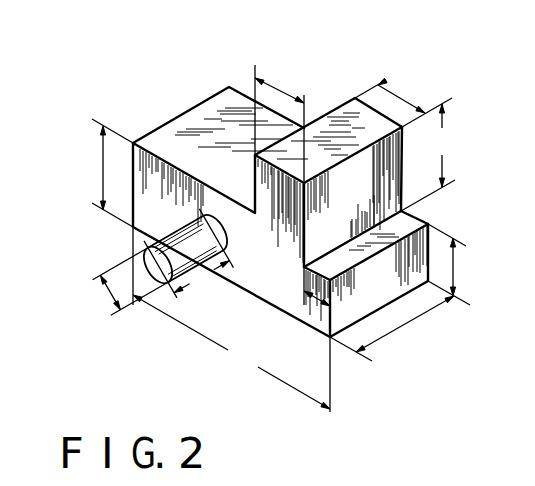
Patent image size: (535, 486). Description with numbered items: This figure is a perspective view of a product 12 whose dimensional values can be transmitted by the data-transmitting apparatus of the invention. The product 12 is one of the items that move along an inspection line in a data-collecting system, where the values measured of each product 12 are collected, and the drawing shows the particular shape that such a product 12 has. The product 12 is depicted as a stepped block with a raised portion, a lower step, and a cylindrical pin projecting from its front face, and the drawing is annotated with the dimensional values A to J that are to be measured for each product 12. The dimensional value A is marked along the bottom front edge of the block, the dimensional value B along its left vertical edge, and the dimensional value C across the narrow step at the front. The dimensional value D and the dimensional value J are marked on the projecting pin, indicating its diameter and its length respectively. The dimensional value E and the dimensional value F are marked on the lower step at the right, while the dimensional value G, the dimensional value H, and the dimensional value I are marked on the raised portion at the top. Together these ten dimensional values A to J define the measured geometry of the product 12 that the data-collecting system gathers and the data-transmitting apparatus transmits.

The product 12 is at (322, 95).
The dimensional value A is at (231, 319).
The dimensional value B is at (106, 173).
The dimensional value C is at (317, 296).
The dimensional value D is at (127, 282).
The dimensional value E is at (400, 321).
The dimensional value F is at (450, 260).
The dimensional value G is at (430, 154).
The dimensional value H is at (390, 94).
The dimensional value I is at (279, 124).
The dimensional value J is at (188, 255).